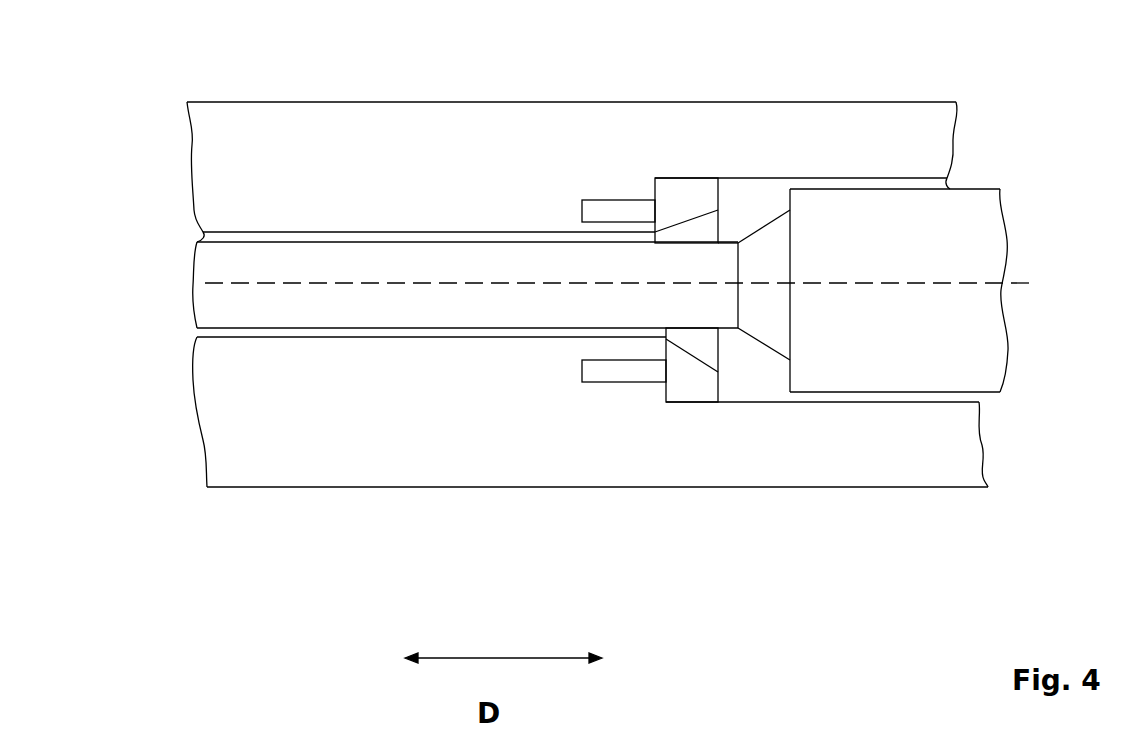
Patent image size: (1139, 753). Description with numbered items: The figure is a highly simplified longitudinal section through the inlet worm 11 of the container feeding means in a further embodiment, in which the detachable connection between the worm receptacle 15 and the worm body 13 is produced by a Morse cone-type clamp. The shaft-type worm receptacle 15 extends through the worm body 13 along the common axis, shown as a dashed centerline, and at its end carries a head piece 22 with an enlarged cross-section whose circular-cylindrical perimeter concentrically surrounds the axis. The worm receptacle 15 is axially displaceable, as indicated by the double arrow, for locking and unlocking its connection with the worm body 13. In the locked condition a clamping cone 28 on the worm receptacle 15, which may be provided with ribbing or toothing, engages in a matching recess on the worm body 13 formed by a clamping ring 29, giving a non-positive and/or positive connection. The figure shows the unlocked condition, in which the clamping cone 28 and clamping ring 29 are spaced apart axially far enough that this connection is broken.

The inlet worm 11 is at (978, 106).
The worm body 13 is at (322, 145).
The worm receptacle 15 is at (498, 263).
The head piece 22 is at (886, 350).
The clamping cone 28 is at (760, 255).
The clamping ring 29 is at (687, 382).